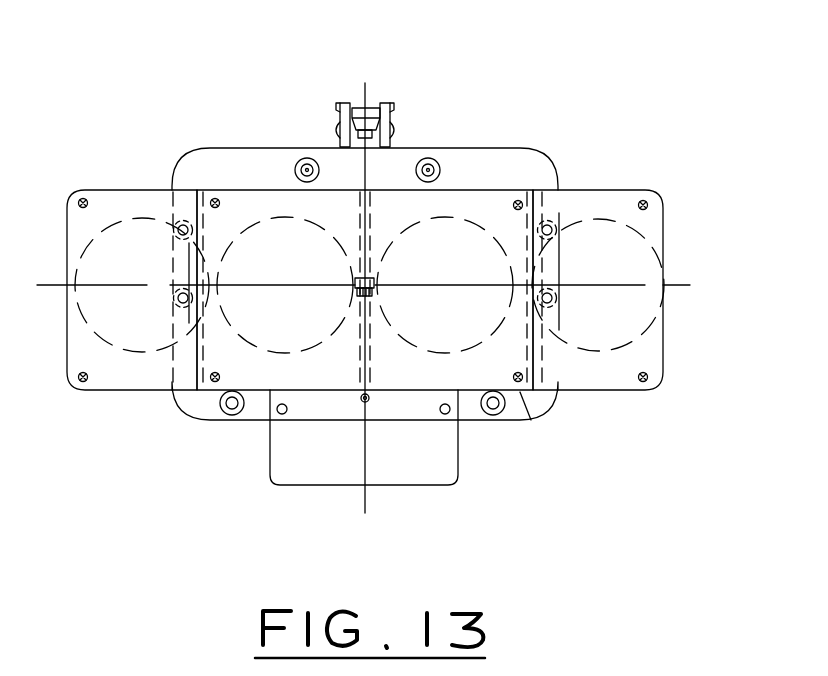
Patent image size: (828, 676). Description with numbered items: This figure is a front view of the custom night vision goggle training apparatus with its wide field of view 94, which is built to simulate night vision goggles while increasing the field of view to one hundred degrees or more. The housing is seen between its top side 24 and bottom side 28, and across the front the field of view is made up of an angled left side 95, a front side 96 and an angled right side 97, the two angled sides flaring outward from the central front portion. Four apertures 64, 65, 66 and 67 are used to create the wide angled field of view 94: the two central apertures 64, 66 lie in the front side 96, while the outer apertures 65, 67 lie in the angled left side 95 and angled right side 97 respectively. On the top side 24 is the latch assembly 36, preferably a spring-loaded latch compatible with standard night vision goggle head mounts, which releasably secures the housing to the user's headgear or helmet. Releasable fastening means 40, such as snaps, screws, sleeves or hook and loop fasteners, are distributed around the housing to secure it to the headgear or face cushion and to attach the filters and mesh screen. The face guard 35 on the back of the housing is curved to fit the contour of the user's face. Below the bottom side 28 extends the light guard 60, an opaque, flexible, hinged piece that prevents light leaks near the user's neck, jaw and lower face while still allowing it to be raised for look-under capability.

The top side 24 is at (490, 190).
The bottom side 28 is at (522, 392).
The face guard 35 is at (197, 147).
The latch assembly 36 is at (356, 102).
The releasable fastening means 40 is at (314, 160).
The light guard 60 is at (300, 467).
The aperture 64 is at (475, 327).
The aperture 65 is at (70, 328).
The aperture 66 is at (260, 326).
The aperture 67 is at (665, 344).
The wide field of view 94 is at (602, 417).
The angled left side 95 is at (107, 202).
The front side 96 is at (245, 210).
The angled right side 97 is at (616, 200).